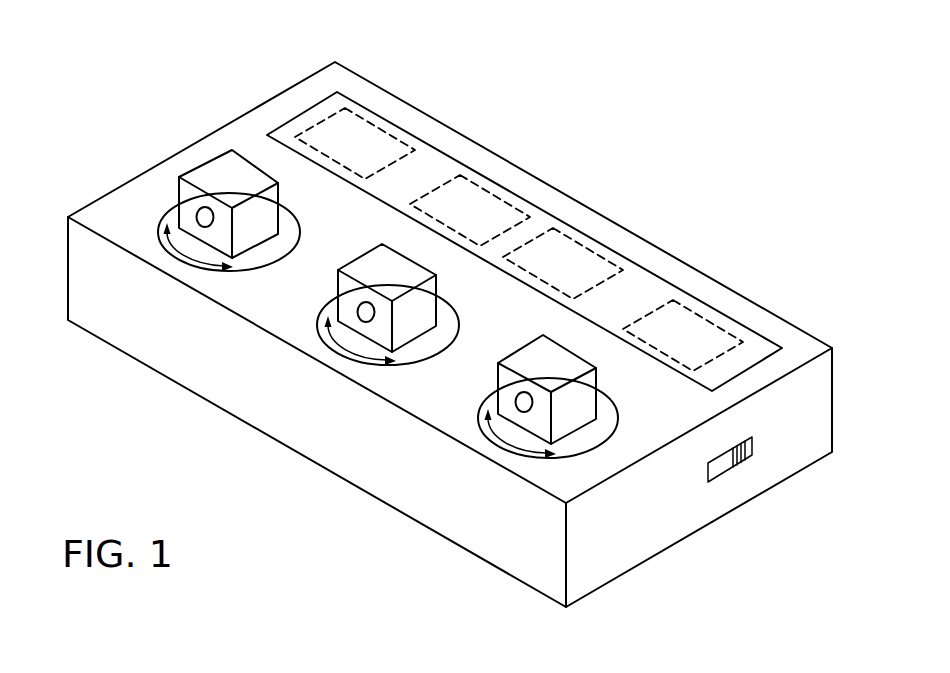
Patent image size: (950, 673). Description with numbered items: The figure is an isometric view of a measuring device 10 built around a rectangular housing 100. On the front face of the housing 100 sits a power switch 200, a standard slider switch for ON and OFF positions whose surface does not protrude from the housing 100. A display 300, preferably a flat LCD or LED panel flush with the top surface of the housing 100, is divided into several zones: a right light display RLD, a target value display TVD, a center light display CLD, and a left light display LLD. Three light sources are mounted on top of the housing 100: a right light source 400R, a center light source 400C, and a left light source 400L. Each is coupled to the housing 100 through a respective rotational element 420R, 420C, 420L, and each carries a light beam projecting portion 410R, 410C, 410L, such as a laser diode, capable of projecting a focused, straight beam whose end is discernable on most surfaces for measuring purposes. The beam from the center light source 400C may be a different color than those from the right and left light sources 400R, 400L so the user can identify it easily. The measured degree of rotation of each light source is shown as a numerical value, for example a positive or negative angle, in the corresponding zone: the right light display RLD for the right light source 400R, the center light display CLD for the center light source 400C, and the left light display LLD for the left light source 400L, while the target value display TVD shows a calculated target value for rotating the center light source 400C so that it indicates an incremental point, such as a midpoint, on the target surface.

The measuring device 10 is at (760, 153).
The housing 100 is at (817, 328).
The power switch 200 is at (752, 450).
The display 300 is at (447, 140).
The right light display RLD is at (355, 142).
The target value display TVD is at (470, 207).
The center light display CLD is at (558, 257).
The left light display LLD is at (682, 332).
The right light source 400R is at (232, 172).
The light beam projecting portion 410R is at (196, 216).
The rotational element 420R is at (176, 256).
The center light source 400C is at (432, 322).
The light beam projecting portion 410C is at (362, 322).
The rotational element 420C is at (338, 353).
The left light source 400L is at (592, 410).
The light beam projecting portion 410L is at (521, 412).
The rotational element 420L is at (587, 453).